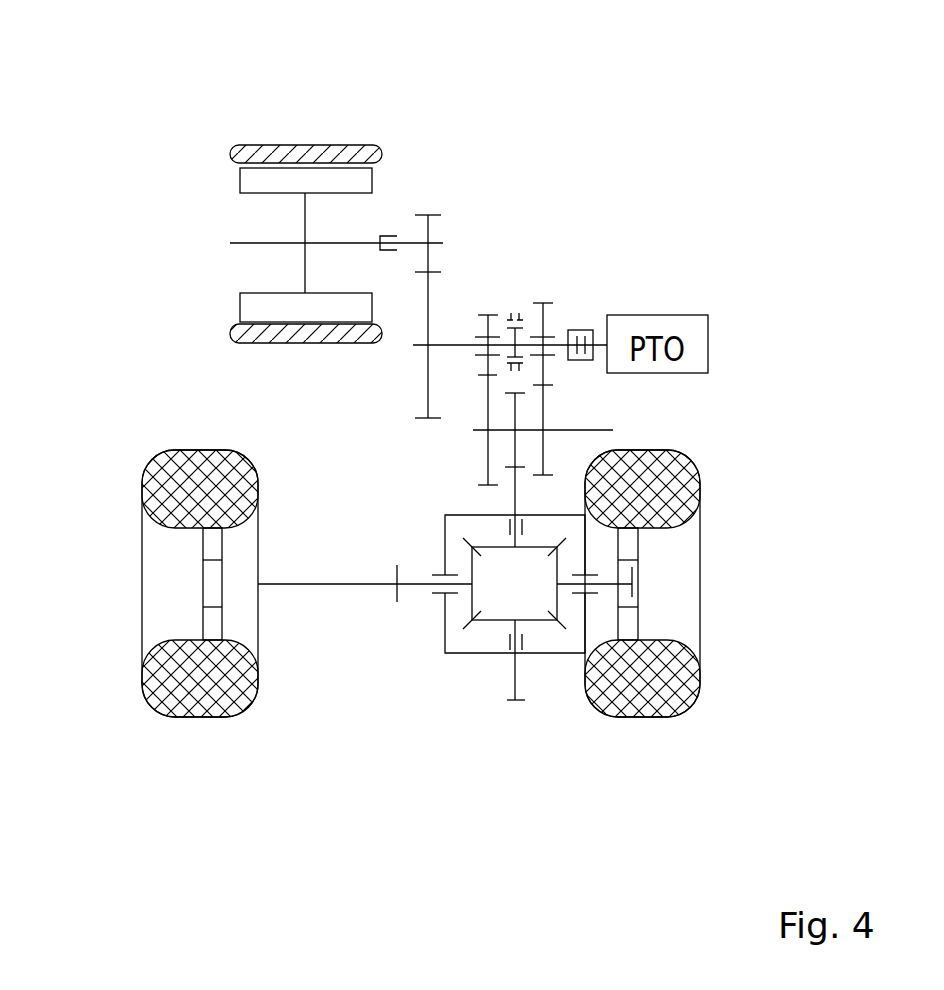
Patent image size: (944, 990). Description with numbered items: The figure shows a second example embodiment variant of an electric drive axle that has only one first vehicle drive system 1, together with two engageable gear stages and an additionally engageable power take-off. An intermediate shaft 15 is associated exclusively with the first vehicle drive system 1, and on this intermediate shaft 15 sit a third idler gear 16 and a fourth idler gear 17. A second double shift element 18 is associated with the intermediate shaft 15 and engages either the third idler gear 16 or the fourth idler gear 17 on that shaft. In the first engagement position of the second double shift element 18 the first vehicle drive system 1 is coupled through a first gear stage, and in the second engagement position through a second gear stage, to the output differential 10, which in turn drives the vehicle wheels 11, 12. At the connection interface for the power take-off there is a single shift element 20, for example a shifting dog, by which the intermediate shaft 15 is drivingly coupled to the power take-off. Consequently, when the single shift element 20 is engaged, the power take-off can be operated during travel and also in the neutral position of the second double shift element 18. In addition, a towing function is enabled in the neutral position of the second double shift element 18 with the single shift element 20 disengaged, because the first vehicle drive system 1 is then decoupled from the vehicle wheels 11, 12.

The first vehicle drive system 1 is at (253, 227).
The output differential 10 is at (533, 658).
The vehicle wheel 11 is at (635, 683).
The vehicle wheel 12 is at (207, 683).
The intermediate shaft 15 is at (455, 345).
The third idler gear 16 is at (493, 313).
The fourth idler gear 17 is at (548, 300).
The second double shift element 18 is at (515, 318).
The single shift element 20 is at (582, 322).